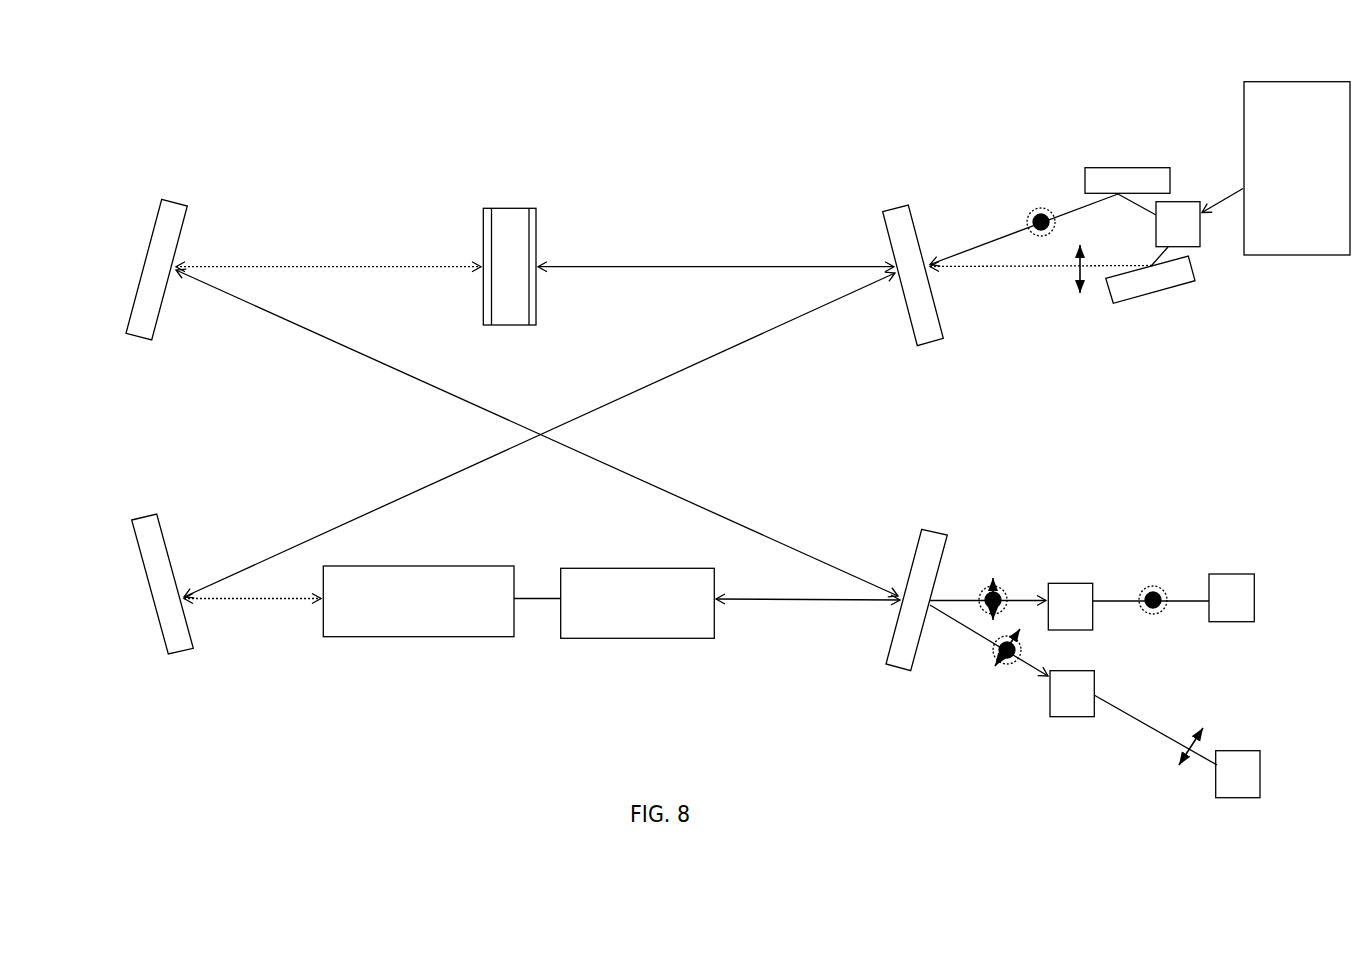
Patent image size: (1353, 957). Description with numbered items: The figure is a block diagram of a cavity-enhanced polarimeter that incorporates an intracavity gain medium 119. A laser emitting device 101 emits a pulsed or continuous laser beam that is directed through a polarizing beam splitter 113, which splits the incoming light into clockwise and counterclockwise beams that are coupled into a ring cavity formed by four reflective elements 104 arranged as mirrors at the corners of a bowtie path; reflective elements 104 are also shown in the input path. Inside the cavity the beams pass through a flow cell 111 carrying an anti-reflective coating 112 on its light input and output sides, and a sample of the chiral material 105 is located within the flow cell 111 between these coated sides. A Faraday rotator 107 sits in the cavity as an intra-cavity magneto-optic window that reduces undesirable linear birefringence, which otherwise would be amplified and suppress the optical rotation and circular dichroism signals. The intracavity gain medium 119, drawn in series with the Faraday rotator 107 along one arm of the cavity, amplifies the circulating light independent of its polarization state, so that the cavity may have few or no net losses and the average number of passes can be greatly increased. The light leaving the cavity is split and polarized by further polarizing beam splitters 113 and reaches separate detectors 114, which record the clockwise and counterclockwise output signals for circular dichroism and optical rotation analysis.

The laser emitting device 101 is at (1297, 168).
The reflective element 104 is at (173, 217).
The chiral material sample 105 is at (508, 322).
The Faraday rotator 107 is at (418, 601).
The flow cell 111 is at (511, 269).
The anti-reflective coating 112 is at (485, 305).
The polarizing beam splitter 113 is at (1196, 238).
The detector 114 is at (1232, 585).
The intracavity gain medium 119 is at (638, 603).